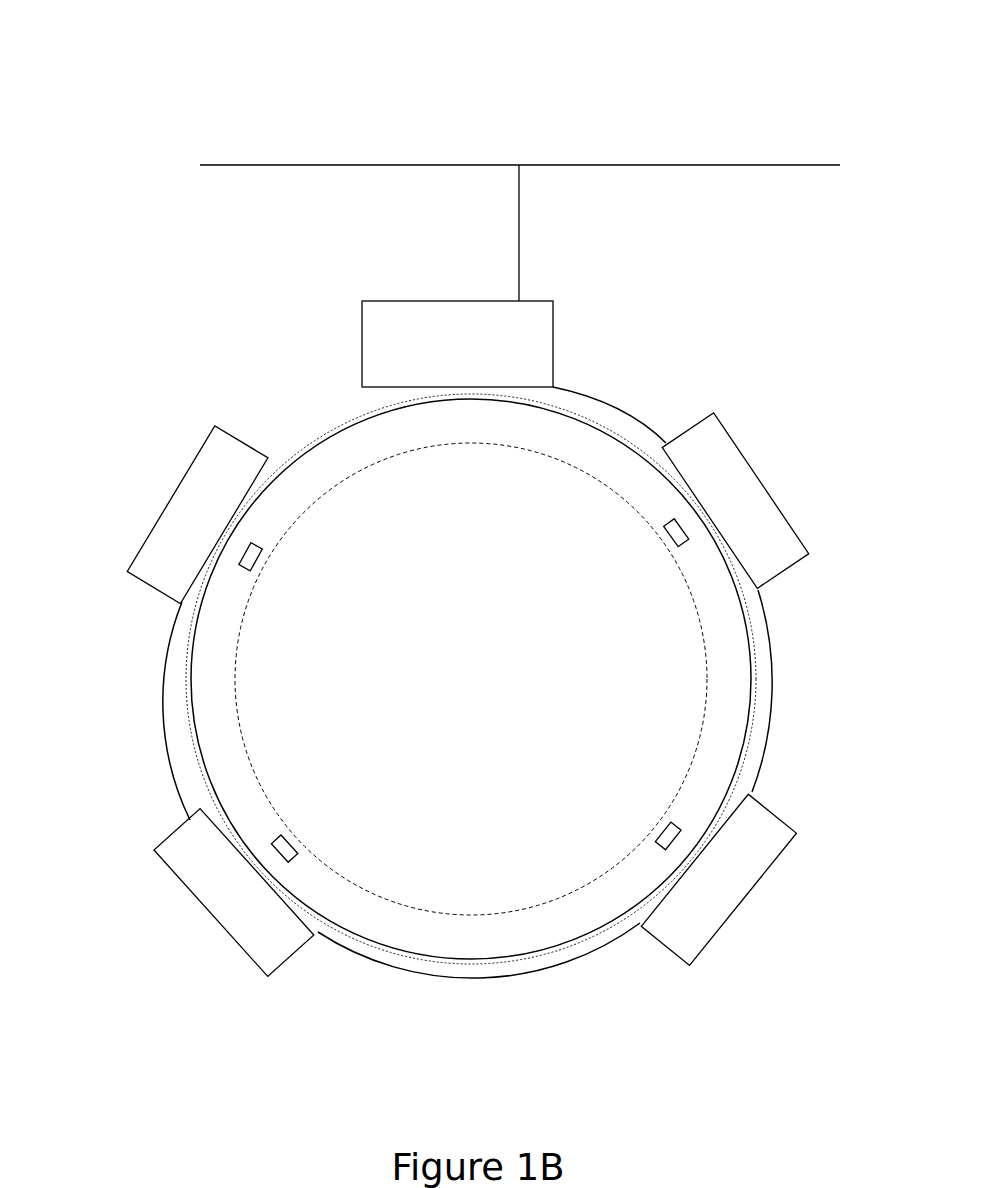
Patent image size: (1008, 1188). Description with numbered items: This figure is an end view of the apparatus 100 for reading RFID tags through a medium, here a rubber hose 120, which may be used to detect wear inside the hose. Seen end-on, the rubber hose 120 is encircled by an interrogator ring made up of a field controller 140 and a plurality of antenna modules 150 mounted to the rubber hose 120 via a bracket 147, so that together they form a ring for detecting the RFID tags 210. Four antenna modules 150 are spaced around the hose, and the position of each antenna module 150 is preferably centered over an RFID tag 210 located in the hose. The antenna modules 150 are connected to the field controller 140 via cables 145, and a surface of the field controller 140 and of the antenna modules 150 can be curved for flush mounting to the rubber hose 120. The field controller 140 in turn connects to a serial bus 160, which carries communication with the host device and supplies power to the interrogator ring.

The apparatus 100 is at (183, 85).
The rubber hose 120 is at (580, 474).
The field controller 140 is at (467, 298).
The cables 145 is at (636, 408).
The mounting bracket 147 is at (333, 416).
The antenna module 150 is at (757, 462).
The serial bus 160 is at (465, 162).
The RFID tag 210 is at (264, 560).